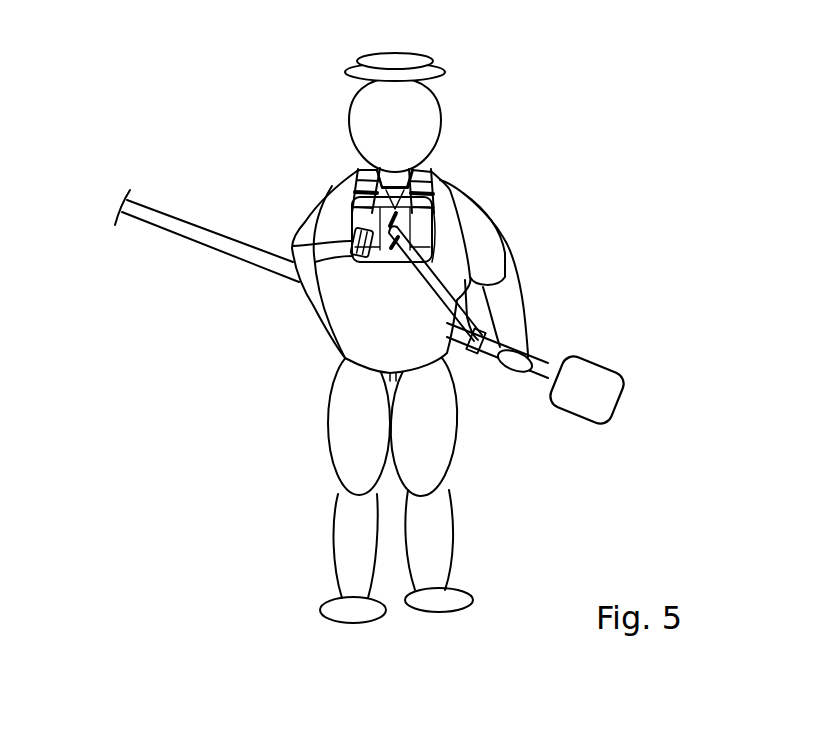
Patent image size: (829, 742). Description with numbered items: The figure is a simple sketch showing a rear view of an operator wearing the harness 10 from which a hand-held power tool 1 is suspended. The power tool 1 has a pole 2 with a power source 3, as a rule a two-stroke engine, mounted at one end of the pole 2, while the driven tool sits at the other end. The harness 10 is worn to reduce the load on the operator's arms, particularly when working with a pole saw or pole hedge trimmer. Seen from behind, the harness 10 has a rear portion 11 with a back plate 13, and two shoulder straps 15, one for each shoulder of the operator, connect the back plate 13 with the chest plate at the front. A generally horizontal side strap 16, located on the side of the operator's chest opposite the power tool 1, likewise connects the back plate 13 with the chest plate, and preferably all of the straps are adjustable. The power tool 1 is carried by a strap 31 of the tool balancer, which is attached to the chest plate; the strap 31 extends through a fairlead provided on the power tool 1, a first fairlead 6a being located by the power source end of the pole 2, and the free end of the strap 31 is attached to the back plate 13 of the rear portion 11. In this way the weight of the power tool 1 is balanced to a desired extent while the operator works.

The power tool 1 is at (371, 321).
The pole 2 is at (172, 227).
The power source 3 is at (577, 396).
The first fairlead 6a is at (483, 353).
The harness 10 is at (419, 239).
The rear portion 11 is at (345, 221).
The back plate 13 is at (423, 238).
The shoulder straps 15 is at (362, 178).
The side strap 16 is at (333, 270).
The strap 31 is at (440, 290).